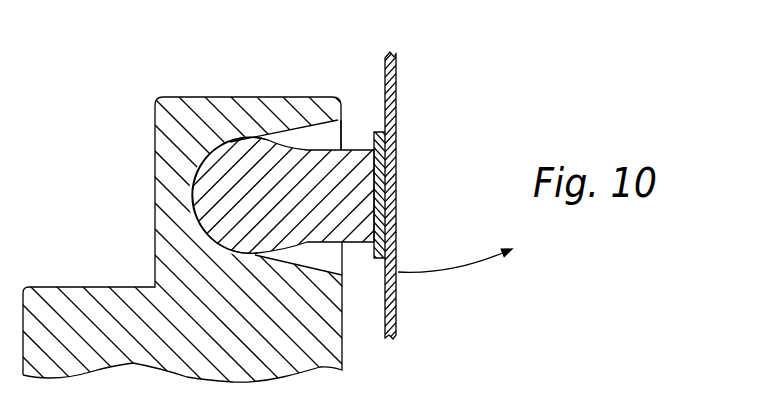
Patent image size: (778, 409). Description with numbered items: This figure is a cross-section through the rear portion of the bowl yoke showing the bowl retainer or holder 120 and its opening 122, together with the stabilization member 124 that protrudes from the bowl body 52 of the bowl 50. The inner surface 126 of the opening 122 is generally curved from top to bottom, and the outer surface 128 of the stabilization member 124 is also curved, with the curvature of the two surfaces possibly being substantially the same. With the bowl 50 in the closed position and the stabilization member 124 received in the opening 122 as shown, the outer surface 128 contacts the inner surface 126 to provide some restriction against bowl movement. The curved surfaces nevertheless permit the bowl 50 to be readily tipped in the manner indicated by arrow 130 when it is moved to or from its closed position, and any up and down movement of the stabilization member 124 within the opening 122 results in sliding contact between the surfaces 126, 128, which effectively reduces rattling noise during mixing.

The bowl retainer or holder 120 is at (192, 97).
The opening 122 is at (342, 133).
The stabilization member 124 is at (257, 177).
The inner surface 126 is at (205, 190).
The outer surface 128 is at (190, 246).
The arrow 130 is at (460, 267).
The bowl 50 is at (397, 303).
The bowl body 52 is at (397, 82).